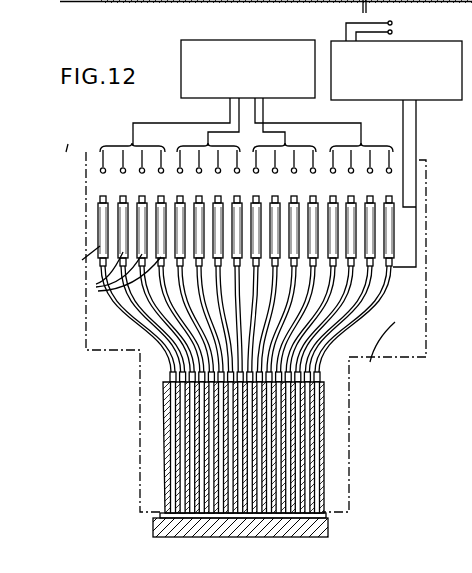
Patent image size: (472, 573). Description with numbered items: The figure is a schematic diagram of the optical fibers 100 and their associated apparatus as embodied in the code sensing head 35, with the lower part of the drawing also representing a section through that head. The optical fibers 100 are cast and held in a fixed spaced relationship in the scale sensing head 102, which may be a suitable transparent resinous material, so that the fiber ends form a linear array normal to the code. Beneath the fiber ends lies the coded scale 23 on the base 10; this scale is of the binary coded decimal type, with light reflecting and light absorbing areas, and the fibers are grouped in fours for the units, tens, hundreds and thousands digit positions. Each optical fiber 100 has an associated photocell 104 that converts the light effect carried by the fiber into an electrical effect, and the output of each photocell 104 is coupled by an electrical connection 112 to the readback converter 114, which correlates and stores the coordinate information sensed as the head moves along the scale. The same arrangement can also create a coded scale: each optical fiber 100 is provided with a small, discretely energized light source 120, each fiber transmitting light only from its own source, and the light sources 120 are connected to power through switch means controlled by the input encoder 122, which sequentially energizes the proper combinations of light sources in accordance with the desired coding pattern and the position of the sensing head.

The base 10 is at (328, 531).
The coded scale 23 is at (326, 514).
The code sensing head 35 is at (349, 478).
The optical fibers 100 is at (260, 389).
The scale sensing head 102 is at (323, 455).
The photocell 104 is at (160, 222).
The connection 112 is at (416, 128).
The readback converter 114 is at (336, 42).
The light source 120 is at (121, 171).
The input encoder 122 is at (203, 40).